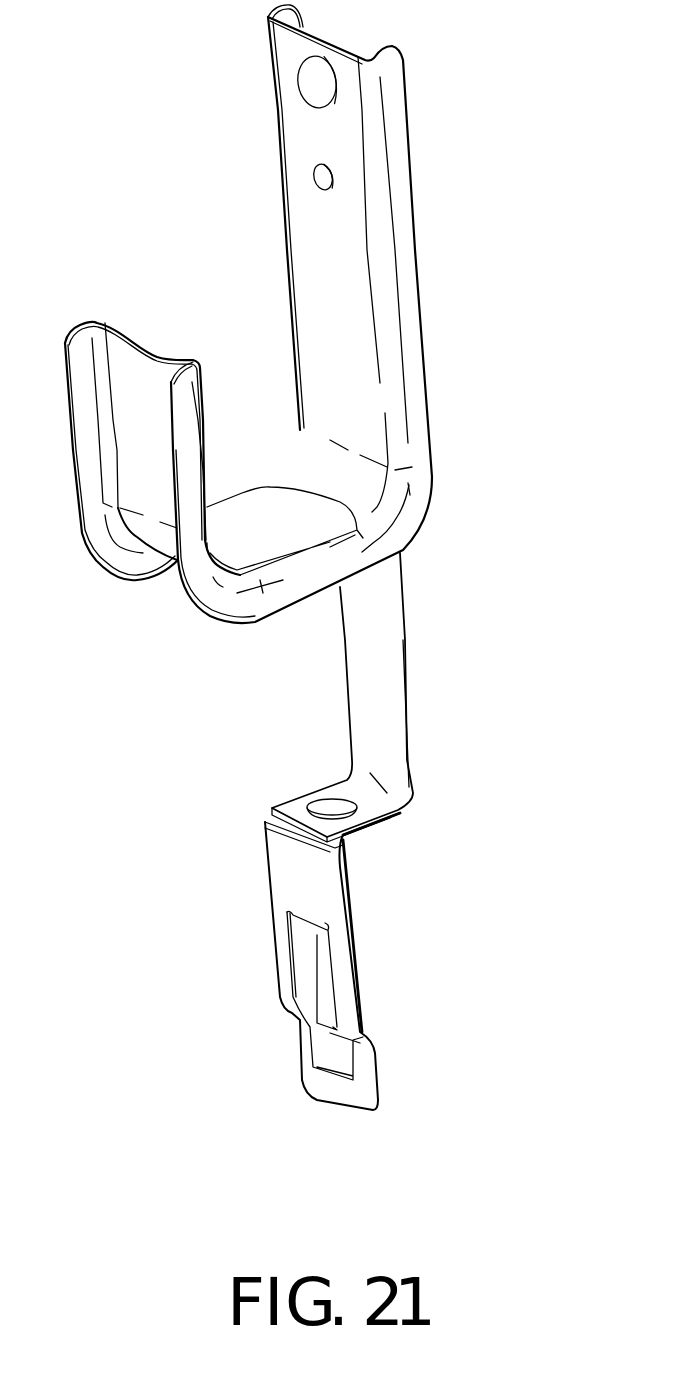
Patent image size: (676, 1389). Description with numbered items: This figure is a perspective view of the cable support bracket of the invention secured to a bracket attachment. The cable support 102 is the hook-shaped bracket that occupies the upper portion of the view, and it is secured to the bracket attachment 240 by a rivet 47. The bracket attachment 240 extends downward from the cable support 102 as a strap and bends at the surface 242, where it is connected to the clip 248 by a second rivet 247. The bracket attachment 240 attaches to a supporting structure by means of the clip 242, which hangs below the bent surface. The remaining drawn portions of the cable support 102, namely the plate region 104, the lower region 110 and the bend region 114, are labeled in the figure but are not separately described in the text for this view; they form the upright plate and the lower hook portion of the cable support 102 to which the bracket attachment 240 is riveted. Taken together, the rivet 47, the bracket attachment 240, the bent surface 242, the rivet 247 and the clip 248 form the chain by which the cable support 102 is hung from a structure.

The rivet 47 is at (313, 85).
The cable support 102 is at (447, 222).
The mounting plate 104 is at (307, 237).
The bottom support 110 is at (248, 513).
The bend 114 is at (270, 597).
The bracket attachment 240 is at (440, 802).
The clip 242 is at (263, 820).
The rivet 247 is at (322, 803).
The clip 248 is at (342, 968).